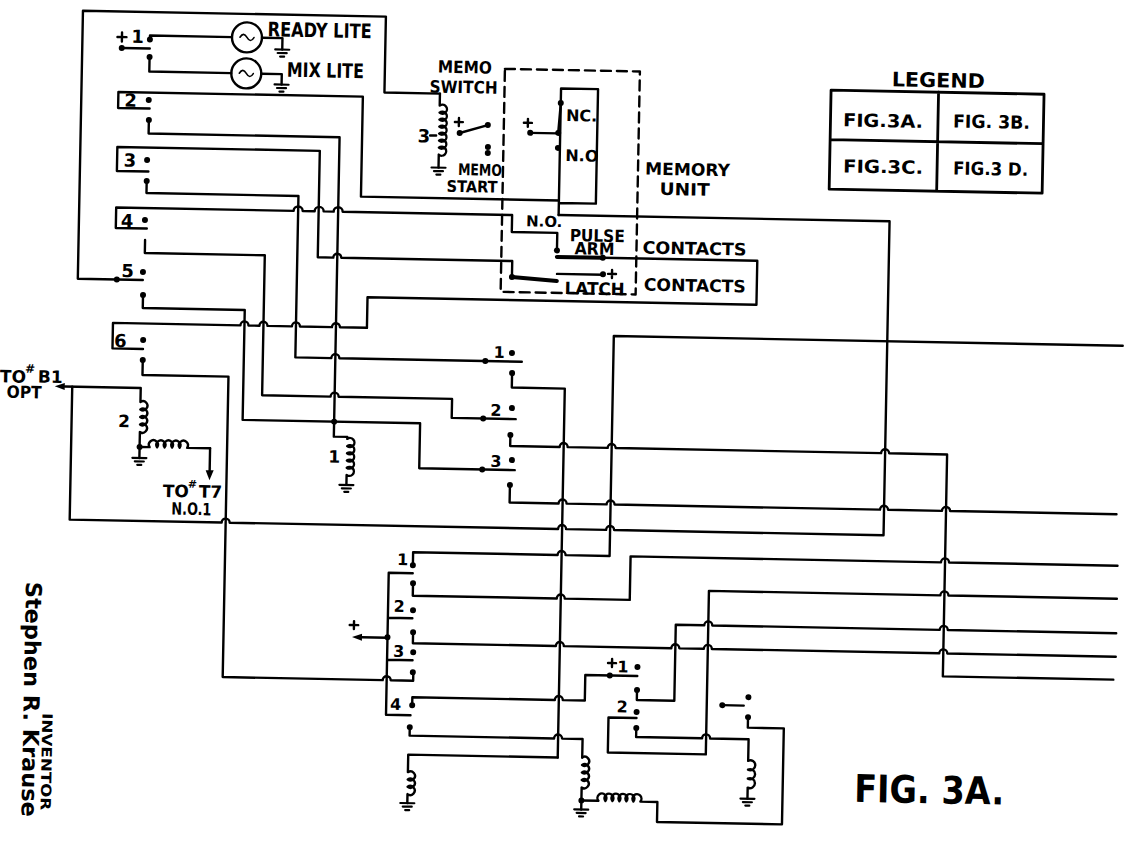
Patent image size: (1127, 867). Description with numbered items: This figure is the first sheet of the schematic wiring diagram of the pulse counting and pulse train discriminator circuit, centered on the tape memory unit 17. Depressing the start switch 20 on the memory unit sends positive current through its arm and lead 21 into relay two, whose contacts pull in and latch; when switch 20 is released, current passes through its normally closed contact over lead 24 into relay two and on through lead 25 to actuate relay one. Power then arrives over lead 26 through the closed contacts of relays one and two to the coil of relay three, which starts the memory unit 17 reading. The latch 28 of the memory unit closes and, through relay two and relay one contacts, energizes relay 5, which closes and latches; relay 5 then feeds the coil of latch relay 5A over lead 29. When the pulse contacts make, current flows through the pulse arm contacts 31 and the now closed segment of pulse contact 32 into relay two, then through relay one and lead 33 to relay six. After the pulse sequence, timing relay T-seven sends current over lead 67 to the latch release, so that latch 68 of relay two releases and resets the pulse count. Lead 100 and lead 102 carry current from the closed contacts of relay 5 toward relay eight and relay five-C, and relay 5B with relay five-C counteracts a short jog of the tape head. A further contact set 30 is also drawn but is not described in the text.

The memory unit 17 is at (636, 146).
The switch 20 is at (578, 151).
The lead 21 is at (713, 215).
The lead 24 is at (592, 101).
The lead 25 is at (337, 302).
The lead 26 is at (75, 210).
The latch 28 is at (533, 266).
The lead 29 is at (486, 739).
The switch bank 30 is at (330, 682).
The pulse arm contacts 31 is at (577, 258).
The pulse contact 32 is at (396, 216).
The lead 33 is at (972, 669).
The lead 67 is at (214, 469).
The latch 68 is at (170, 451).
The lead 100 is at (488, 599).
The lead 102 is at (514, 553).
The relay 5 is at (467, 783).
The latch relay 5A is at (566, 786).
The relay 5B is at (730, 782).